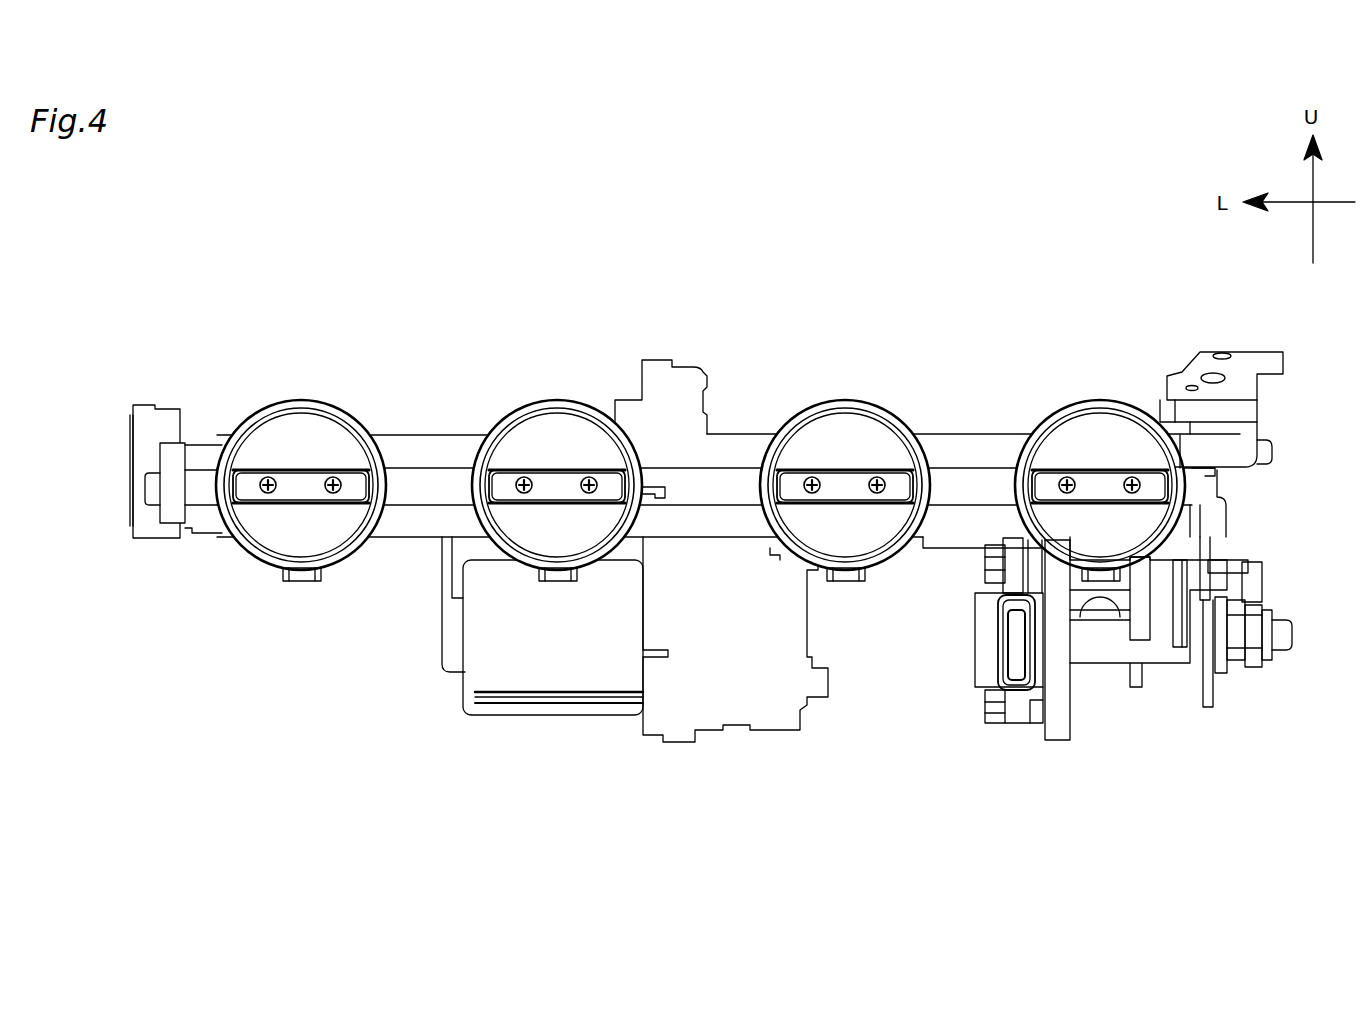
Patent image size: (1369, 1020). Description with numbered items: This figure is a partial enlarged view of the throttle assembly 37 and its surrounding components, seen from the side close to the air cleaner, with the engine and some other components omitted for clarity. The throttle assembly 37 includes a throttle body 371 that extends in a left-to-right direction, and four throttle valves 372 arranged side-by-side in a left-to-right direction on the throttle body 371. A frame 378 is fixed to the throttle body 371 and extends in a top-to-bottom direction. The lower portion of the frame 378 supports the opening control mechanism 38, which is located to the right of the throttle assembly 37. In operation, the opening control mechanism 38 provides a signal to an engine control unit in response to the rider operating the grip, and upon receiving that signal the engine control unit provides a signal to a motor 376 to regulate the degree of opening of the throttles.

The throttle assembly 37 is at (950, 503).
The throttle body 371 is at (390, 517).
The throttle valves 372 is at (283, 532).
The motor 376 is at (485, 657).
The frame 378 is at (1060, 715).
The opening control mechanism 38 is at (1277, 607).